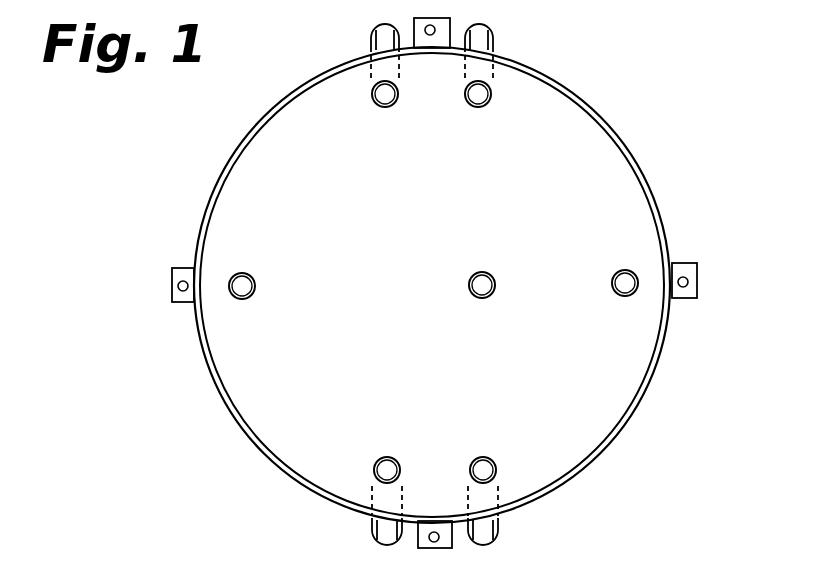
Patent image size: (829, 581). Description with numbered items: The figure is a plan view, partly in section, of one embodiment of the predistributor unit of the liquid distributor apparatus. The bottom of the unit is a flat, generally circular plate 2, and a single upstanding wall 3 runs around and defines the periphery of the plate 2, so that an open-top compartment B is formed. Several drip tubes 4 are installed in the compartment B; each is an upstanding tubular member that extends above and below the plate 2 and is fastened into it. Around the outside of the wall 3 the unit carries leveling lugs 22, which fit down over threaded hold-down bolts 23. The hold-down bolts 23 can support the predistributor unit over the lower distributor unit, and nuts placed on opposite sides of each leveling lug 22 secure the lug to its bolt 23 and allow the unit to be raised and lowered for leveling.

The circular plate 2 is at (300, 453).
The upstanding wall 3 is at (618, 440).
The drip tubes 4 is at (471, 106).
The leveling lugs 22 is at (181, 272).
The hold-down bolts 23 is at (181, 300).
The compartment B is at (373, 348).